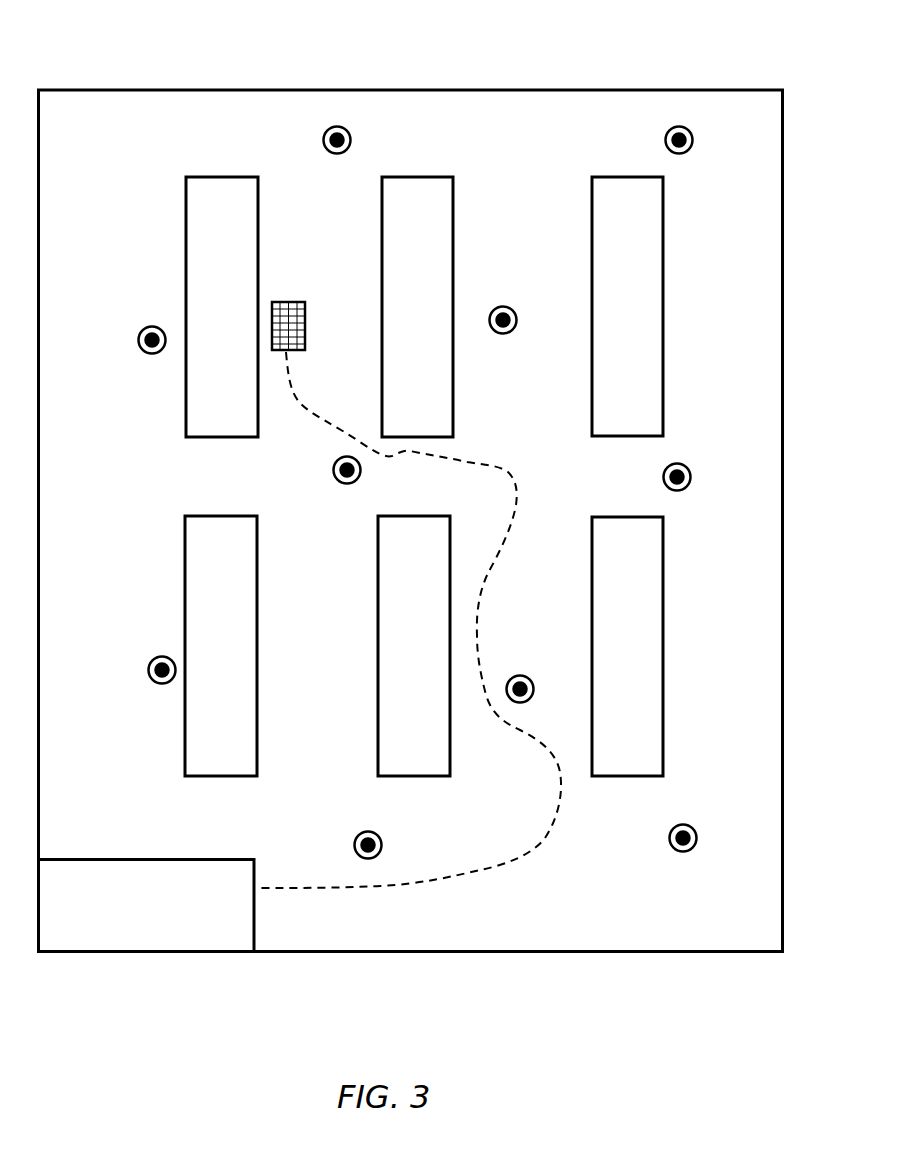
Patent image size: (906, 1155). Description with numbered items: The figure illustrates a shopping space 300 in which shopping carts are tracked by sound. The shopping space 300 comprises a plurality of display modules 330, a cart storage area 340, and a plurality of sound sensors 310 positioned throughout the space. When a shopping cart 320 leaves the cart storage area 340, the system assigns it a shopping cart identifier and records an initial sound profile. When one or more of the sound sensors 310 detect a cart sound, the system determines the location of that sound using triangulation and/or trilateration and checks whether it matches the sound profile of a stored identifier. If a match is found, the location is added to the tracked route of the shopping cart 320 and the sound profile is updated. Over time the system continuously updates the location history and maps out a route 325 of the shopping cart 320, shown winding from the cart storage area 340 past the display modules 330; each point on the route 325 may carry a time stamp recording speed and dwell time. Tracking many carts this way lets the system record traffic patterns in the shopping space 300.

The shopping space 300 is at (675, 87).
The sound sensors 310 is at (695, 135).
The shopping cart 320 is at (304, 301).
The route 325 is at (482, 463).
The display modules 330 is at (665, 290).
The cart storage area 340 is at (147, 906).